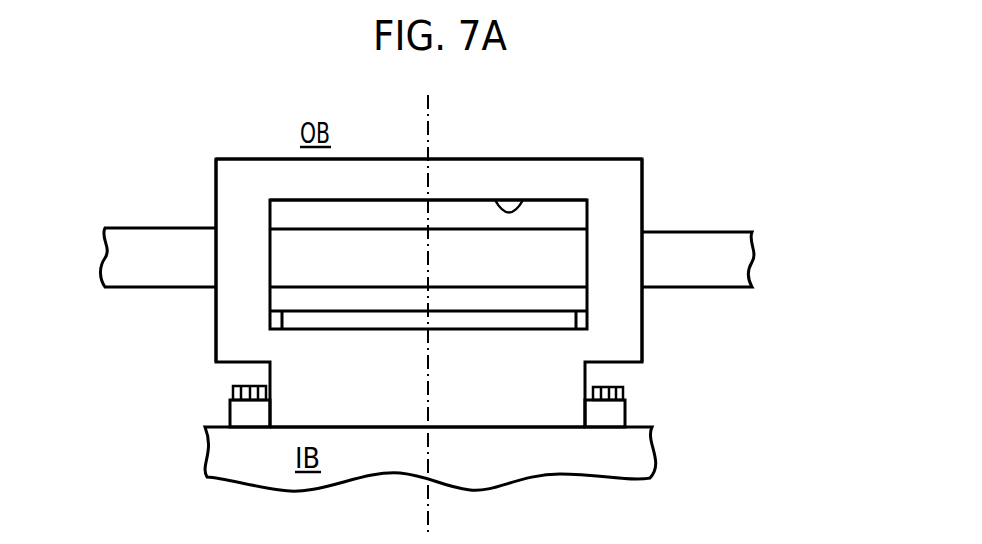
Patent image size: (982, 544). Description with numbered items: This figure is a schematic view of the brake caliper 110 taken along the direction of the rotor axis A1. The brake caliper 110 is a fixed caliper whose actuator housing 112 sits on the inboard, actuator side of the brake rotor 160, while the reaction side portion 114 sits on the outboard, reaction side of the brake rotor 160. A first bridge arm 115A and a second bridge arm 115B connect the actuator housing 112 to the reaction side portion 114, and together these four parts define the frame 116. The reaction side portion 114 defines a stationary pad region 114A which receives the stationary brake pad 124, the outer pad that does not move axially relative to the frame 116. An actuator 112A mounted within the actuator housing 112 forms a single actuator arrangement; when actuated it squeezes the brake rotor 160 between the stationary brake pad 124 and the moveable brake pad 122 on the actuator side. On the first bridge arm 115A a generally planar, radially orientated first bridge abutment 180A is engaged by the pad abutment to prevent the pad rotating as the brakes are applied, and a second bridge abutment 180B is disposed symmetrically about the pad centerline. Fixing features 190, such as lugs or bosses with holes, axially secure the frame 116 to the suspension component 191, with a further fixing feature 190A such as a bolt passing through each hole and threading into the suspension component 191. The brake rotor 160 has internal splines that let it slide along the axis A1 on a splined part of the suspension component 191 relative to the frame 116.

The brake caliper 110 is at (656, 354).
The actuator housing 112 is at (530, 407).
The actuator 112A is at (363, 322).
The reaction side portion 114 is at (453, 175).
The stationary pad region 114A is at (512, 211).
The first bridge arm 115A is at (230, 212).
The second bridge arm 115B is at (627, 323).
The frame 116 is at (628, 198).
The moveable brake pad 122 is at (293, 300).
The stationary brake pad 124 is at (302, 214).
The brake rotor 160 is at (732, 258).
The first bridge abutment 180A is at (273, 255).
The second bridge abutment 180B is at (587, 260).
The fixing feature 190 is at (242, 415).
The fixing feature 190A is at (242, 387).
The suspension component 191 is at (222, 453).
The axis A1 is at (427, 510).